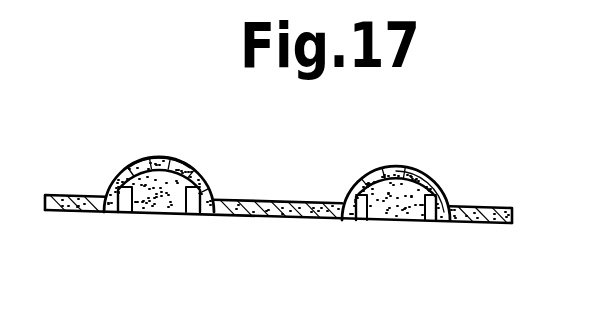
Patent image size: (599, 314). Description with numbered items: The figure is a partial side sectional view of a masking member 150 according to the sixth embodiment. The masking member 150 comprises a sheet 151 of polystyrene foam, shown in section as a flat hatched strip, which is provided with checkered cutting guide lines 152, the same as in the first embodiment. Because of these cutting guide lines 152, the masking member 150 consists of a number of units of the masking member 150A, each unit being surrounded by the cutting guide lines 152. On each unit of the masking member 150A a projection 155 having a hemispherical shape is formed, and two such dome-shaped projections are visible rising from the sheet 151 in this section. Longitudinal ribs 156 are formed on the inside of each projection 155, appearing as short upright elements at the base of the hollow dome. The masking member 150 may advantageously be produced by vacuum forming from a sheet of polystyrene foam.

The masking member 150 is at (331, 185).
The unit of the masking member 150A is at (186, 161).
The sheet 151 is at (292, 202).
The cutting guide lines 152 is at (258, 218).
The projection 155 is at (153, 158).
The longitudinal ribs 156 is at (130, 213).